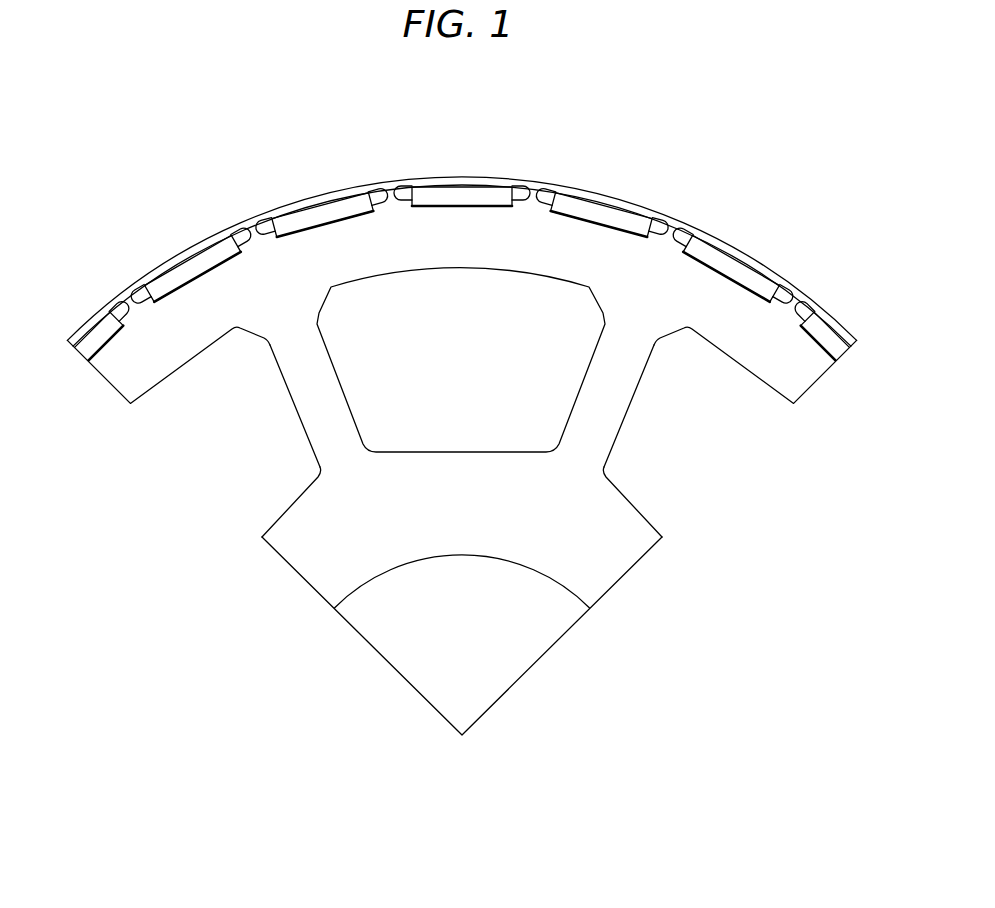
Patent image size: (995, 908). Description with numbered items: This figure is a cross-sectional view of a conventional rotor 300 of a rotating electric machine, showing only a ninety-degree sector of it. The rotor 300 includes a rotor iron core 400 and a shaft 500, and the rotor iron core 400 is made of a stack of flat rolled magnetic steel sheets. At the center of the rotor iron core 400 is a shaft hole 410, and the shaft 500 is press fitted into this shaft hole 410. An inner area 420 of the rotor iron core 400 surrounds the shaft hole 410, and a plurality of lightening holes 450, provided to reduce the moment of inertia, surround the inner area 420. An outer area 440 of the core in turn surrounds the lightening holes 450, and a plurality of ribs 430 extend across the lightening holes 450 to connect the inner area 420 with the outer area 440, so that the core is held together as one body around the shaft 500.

The rotor 300 is at (157, 248).
The rotor iron core 400 is at (300, 265).
The shaft hole 410 is at (355, 587).
The inner area 420 is at (568, 538).
The ribs 430 is at (608, 380).
The outer area 440 is at (650, 267).
The lightening holes 450 is at (452, 372).
The shaft 500 is at (443, 653).